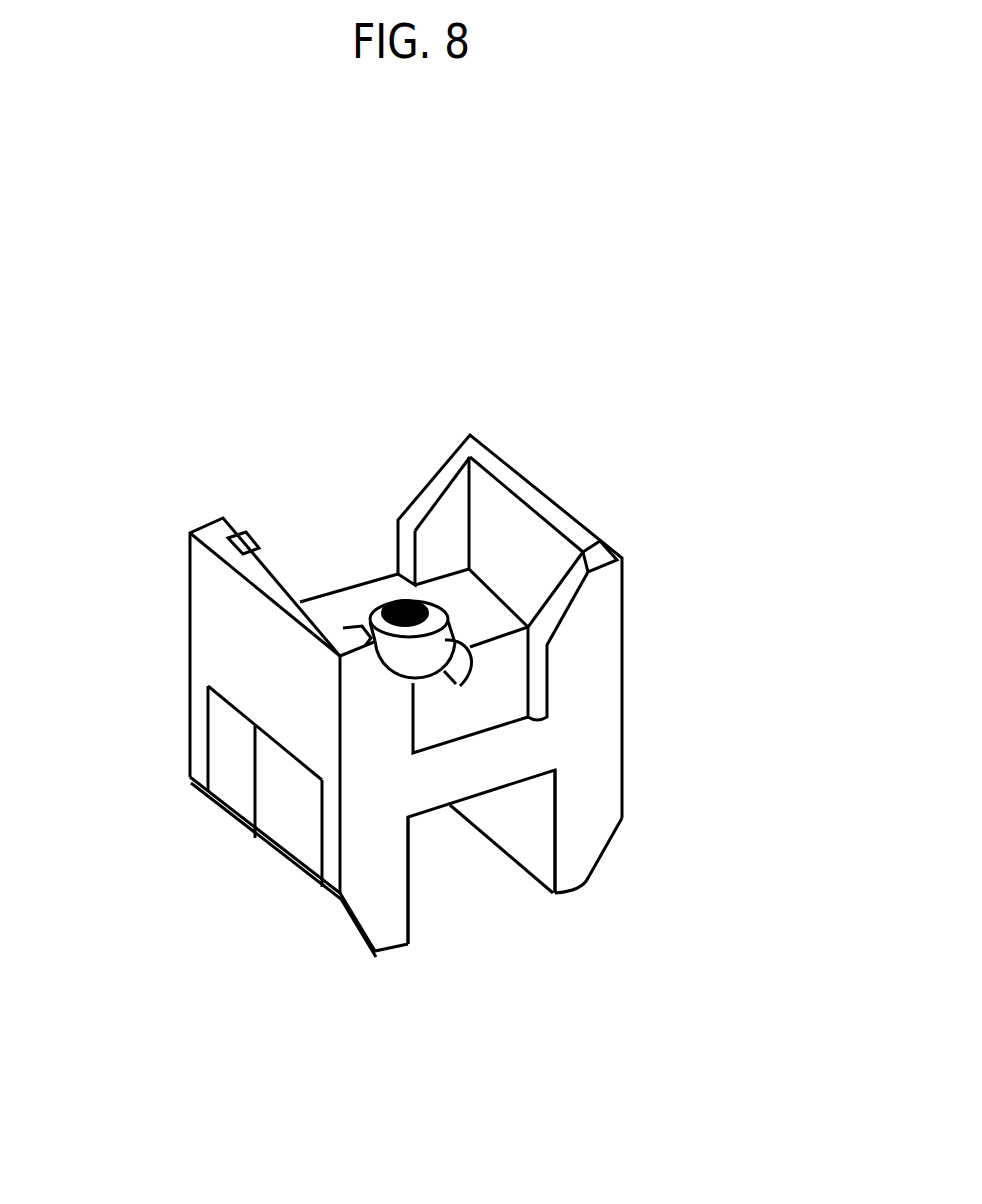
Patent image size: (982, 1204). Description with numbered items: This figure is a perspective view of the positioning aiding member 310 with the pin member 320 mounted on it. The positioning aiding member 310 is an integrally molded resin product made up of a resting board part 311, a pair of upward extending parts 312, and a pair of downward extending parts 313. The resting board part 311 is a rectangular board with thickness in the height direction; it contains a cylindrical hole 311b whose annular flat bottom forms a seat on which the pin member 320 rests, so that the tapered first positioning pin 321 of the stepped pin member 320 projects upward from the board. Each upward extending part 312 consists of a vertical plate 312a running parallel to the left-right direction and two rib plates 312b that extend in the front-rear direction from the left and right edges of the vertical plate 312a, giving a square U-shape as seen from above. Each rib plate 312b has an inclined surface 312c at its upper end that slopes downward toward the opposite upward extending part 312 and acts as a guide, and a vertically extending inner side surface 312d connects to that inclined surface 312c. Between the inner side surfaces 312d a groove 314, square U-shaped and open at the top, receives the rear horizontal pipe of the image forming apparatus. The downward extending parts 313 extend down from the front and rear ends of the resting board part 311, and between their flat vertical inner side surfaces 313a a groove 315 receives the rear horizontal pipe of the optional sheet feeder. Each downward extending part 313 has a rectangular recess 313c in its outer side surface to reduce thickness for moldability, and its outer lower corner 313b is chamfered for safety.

The positioning aiding member 310 is at (228, 383).
The resting board part 311 is at (490, 760).
The cylindrical hole 311b is at (446, 630).
The upward extending part 312 is at (628, 528).
The vertical plate 312a is at (540, 500).
The rib plate 312b is at (398, 558).
The inclined surface 312c is at (412, 527).
The inner side surface 312d is at (397, 558).
The downward extending part 313 is at (620, 869).
The inner side surface 313a is at (553, 847).
The outer lower corner 313b is at (613, 840).
The rectangular recess 313c is at (300, 823).
The groove 314 is at (387, 597).
The groove 315 is at (490, 873).
The pin member 320 is at (362, 563).
The first positioning pin 321 is at (428, 637).